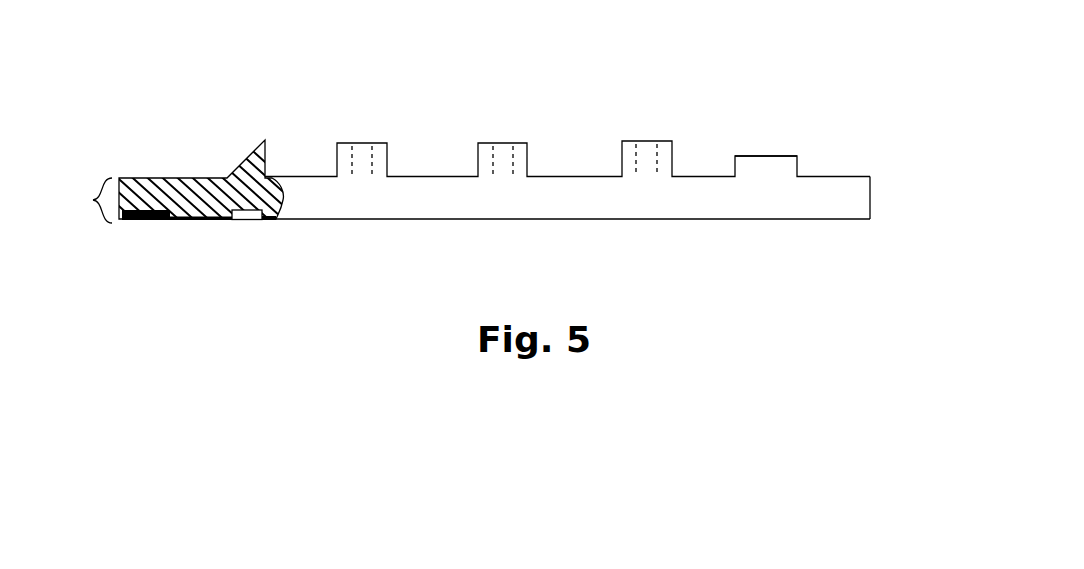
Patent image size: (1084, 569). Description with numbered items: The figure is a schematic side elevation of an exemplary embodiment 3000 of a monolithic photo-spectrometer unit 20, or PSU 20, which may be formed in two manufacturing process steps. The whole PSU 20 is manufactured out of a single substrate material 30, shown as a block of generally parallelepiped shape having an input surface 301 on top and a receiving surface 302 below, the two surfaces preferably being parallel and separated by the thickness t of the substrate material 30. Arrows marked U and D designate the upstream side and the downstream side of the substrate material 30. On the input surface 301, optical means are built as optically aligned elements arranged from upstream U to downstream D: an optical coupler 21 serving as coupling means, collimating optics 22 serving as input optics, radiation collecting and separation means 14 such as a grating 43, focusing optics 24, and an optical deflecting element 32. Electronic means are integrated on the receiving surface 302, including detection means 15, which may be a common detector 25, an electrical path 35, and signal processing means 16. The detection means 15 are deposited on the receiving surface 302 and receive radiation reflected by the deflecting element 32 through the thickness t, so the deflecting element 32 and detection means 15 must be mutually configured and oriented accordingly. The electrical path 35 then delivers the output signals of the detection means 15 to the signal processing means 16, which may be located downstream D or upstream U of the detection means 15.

The exemplary embodiment 3000 is at (830, 82).
The monolithic photo-spectrometer unit 20 is at (850, 114).
The substrate material 30 is at (690, 210).
The input surface 301 is at (848, 161).
The receiving surface 302 is at (831, 230).
The upstream side U is at (890, 192).
The focusing optics 24 is at (363, 140).
The grating 43 is at (502, 140).
The radiation collecting and separation means 14 is at (516, 140).
The collimating optics 22 is at (648, 140).
The optical coupler 21 is at (765, 155).
The optical deflecting element 32 is at (262, 140).
The signal processing means 16 is at (132, 223).
The electrical path 35 is at (202, 222).
The detection means 15 is at (248, 223).
The common detector 25 is at (247, 215).
The downstream side D is at (112, 153).
The thickness t is at (93, 202).